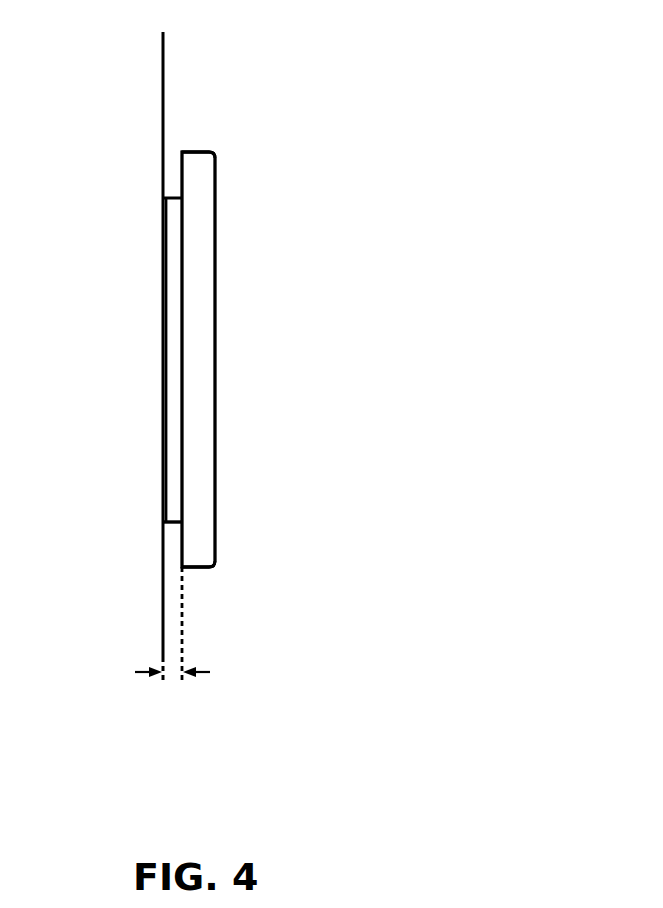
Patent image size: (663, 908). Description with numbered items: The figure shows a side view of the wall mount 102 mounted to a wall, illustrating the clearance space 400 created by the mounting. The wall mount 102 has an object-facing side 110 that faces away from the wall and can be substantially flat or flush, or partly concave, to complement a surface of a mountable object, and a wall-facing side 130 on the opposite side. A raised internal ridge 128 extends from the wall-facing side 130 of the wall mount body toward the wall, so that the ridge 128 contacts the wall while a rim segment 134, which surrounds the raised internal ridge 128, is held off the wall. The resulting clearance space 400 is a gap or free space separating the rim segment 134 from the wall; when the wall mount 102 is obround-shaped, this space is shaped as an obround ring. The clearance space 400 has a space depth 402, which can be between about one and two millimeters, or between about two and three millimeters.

The element wall is at (163, 93).
The clearance space 400 is at (174, 143).
The wall mount 102 is at (216, 230).
The rim segment 134 is at (184, 172).
The raised internal ridge 128 is at (170, 340).
The wall-facing side 130 is at (158, 527).
The object-facing side 110 is at (222, 567).
The space depth 402 is at (210, 672).